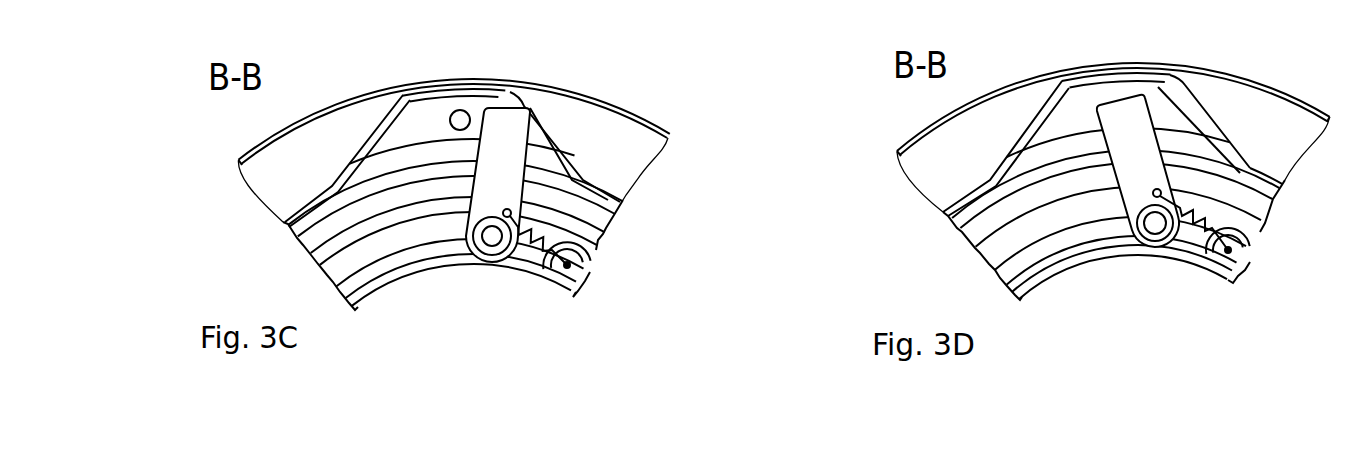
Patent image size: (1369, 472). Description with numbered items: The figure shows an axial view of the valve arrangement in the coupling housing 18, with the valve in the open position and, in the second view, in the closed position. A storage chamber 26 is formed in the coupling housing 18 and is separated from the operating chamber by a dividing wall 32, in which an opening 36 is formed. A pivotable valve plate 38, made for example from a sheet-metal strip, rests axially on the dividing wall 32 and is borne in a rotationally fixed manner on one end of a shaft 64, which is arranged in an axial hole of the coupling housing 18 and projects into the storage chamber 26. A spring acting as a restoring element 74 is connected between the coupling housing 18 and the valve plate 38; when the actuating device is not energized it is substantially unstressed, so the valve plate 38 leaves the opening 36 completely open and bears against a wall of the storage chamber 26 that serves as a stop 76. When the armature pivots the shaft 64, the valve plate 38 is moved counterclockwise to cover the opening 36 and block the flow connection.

In FIG. 3C, the coupling housing 18 is at (634, 163).
In FIG. 3D, the coupling housing 18 is at (937, 179).
In FIG. 3C, the storage chamber 26 is at (390, 140).
In FIG. 3C, the dividing wall 32 is at (408, 125).
In FIG. 3C, the opening 36 is at (460, 110).
In FIG. 3C, the valve plate 38 is at (514, 124).
In FIG. 3C, the shaft 64 is at (490, 237).
In FIG. 3C, the restoring element 74 is at (532, 232).
In FIG. 3C, the stop 76 is at (553, 148).